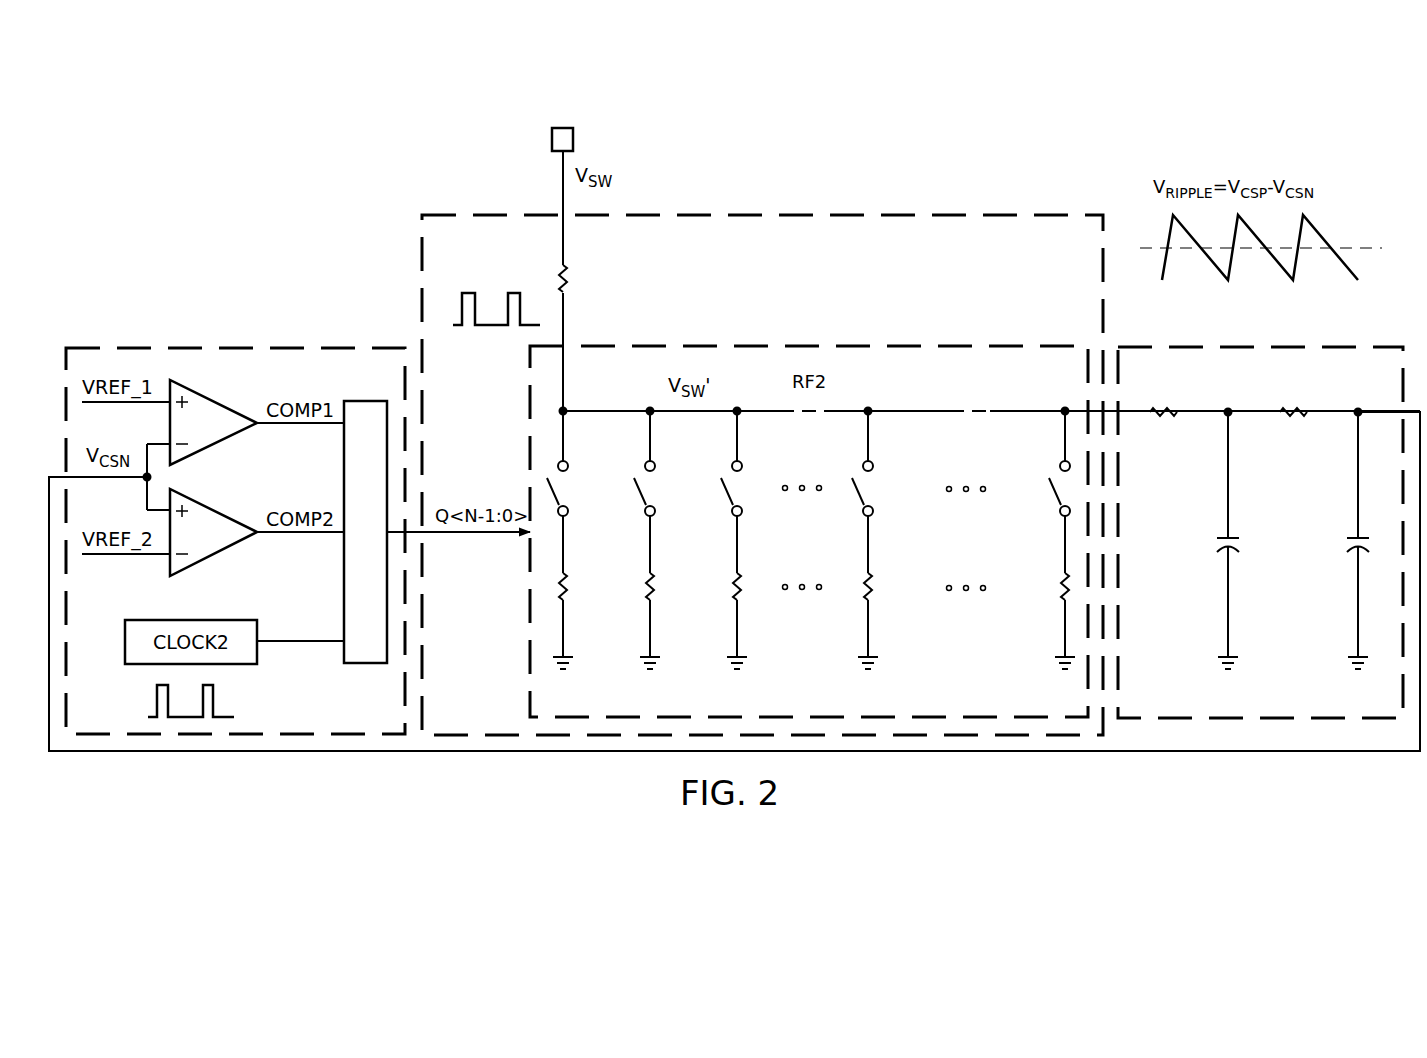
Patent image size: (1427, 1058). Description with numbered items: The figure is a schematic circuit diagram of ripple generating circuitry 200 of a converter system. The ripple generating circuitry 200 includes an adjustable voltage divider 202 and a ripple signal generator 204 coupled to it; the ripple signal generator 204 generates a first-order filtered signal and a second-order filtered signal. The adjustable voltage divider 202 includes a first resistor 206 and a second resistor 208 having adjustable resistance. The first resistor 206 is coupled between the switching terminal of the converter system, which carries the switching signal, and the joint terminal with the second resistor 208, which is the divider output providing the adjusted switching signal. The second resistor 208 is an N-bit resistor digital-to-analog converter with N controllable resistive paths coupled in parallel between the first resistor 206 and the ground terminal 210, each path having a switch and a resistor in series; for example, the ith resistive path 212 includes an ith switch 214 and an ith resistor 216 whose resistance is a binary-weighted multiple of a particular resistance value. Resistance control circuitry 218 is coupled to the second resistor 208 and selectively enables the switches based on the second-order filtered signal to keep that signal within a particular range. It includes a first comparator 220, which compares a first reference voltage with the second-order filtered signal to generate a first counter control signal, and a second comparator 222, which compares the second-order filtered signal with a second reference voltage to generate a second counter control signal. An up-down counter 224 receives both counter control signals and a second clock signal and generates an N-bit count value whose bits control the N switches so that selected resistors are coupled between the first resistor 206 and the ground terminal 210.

The ripple generating circuitry 200 is at (588, 107).
The adjustable voltage divider 202 is at (790, 212).
The ripple signal generator 204 is at (1315, 342).
The first resistor 206 is at (557, 278).
The second resistor 208 is at (874, 344).
The ground terminal GND 210 is at (573, 665).
The ith resistive path 212 is at (922, 636).
The ith switch 214 is at (858, 484).
The ith resistor 216 is at (863, 587).
The resistance control circuitry 218 is at (193, 343).
The first comparator 220 is at (215, 398).
The second comparator 222 is at (213, 555).
The up-down counter 224 is at (366, 667).